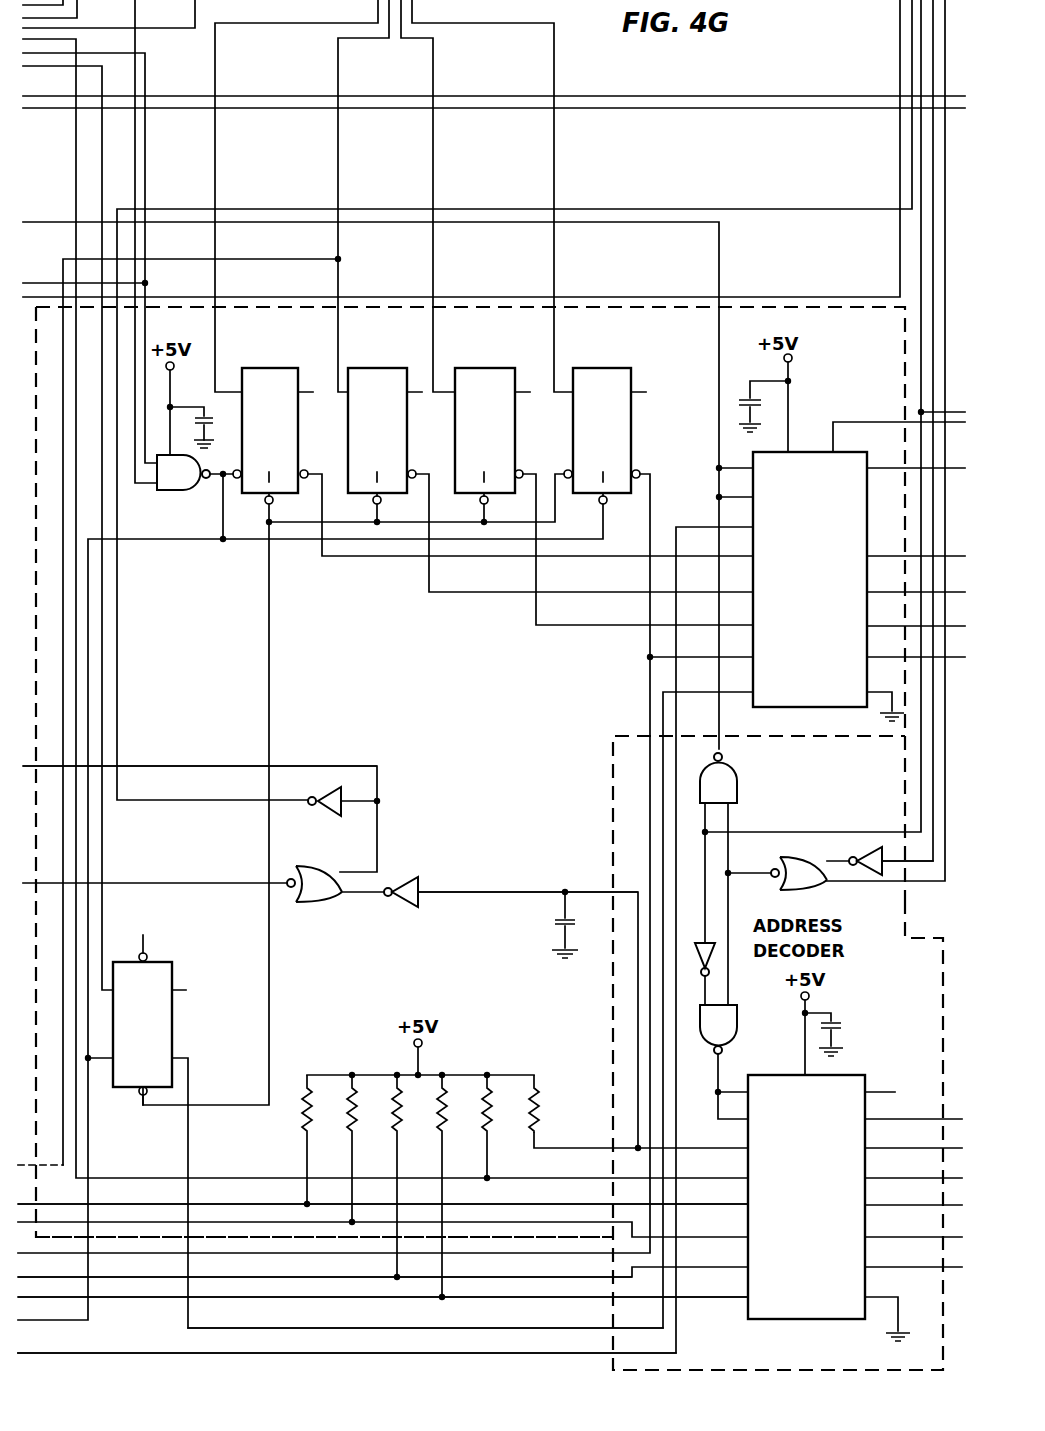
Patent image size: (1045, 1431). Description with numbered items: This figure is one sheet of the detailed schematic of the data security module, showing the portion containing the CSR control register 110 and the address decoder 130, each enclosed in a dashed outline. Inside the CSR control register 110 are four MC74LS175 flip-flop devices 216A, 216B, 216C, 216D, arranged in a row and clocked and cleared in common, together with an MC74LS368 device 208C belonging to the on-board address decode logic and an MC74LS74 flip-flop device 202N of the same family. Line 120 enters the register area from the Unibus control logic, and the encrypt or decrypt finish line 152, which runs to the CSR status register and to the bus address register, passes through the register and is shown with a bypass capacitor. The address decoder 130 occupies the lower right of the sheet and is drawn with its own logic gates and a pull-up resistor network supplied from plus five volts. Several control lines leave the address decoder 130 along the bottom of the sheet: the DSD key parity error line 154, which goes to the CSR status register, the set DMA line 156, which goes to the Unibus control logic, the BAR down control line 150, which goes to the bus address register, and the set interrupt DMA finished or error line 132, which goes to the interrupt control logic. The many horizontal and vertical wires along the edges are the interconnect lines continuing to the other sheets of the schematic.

The MC74LS175 device 216A is at (268, 372).
The MC74LS175 device 216B is at (382, 372).
The MC74LS175 device 216C is at (494, 372).
The MC74LS175 device 216D is at (626, 372).
The MC74LS368 device 208C is at (815, 452).
The CSR control register 110 is at (449, 698).
The line 120 is at (197, 766).
The encrypt or decrypt finish line 152 is at (514, 892).
The MC74LS74 device 202N is at (170, 976).
The address decoder 130 is at (862, 1082).
The DSD key parity error line 154 is at (254, 1204).
The set DMA line 156 is at (264, 1228).
The BAR down control line 150 is at (328, 1277).
The set interrupt DMA finished or error line 132 is at (465, 1300).